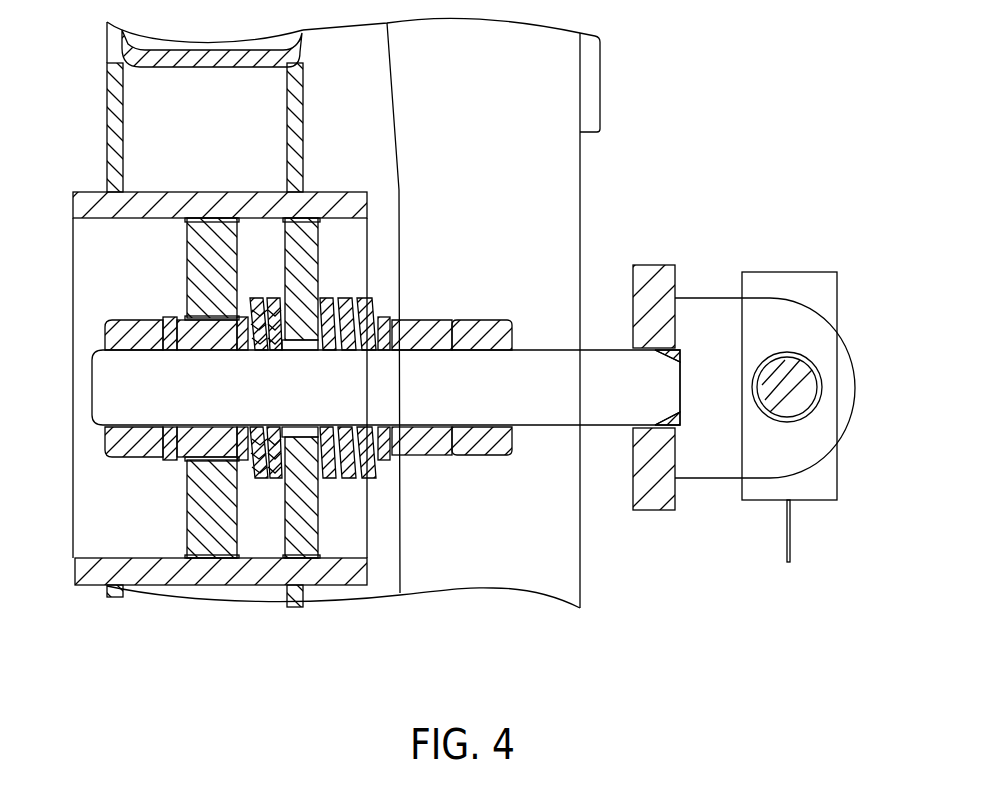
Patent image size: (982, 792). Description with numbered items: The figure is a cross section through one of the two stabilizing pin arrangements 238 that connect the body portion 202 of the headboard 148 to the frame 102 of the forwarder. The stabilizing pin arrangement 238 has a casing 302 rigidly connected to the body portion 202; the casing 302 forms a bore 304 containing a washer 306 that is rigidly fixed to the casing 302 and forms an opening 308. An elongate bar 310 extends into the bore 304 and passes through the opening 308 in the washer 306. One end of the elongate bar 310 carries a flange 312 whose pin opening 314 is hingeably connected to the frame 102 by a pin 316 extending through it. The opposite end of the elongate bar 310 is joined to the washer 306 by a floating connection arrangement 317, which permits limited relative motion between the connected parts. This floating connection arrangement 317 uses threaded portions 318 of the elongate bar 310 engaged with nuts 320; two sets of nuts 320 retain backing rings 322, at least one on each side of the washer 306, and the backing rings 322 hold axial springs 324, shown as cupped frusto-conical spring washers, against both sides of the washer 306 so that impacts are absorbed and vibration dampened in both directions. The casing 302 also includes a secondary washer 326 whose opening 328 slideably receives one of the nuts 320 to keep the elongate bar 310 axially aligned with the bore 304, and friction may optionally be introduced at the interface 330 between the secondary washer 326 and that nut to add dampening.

The frame 102 is at (838, 285).
The headboard 148 is at (227, 140).
The body portion 202 is at (115, 92).
The stabilizing pin arrangement 238 is at (789, 97).
The casing 302 is at (82, 199).
The bore 304 is at (92, 521).
The washer 306 is at (305, 258).
The opening 308 is at (300, 352).
The elongate bar 310 is at (100, 383).
The flange 312 is at (655, 497).
The pin opening 314 is at (818, 405).
The pin 316 is at (810, 380).
The floating connection arrangement 317 is at (262, 525).
The threaded portions 318 is at (467, 394).
The nuts 320 is at (112, 338).
The backing rings 322 is at (372, 475).
The axial springs 324 is at (272, 310).
The secondary washer 326 is at (200, 548).
The opening 328 is at (181, 459).
The interface 330 is at (181, 317).